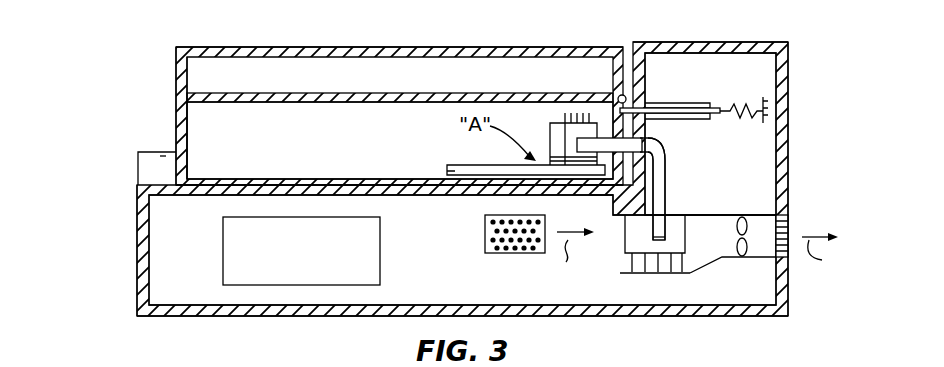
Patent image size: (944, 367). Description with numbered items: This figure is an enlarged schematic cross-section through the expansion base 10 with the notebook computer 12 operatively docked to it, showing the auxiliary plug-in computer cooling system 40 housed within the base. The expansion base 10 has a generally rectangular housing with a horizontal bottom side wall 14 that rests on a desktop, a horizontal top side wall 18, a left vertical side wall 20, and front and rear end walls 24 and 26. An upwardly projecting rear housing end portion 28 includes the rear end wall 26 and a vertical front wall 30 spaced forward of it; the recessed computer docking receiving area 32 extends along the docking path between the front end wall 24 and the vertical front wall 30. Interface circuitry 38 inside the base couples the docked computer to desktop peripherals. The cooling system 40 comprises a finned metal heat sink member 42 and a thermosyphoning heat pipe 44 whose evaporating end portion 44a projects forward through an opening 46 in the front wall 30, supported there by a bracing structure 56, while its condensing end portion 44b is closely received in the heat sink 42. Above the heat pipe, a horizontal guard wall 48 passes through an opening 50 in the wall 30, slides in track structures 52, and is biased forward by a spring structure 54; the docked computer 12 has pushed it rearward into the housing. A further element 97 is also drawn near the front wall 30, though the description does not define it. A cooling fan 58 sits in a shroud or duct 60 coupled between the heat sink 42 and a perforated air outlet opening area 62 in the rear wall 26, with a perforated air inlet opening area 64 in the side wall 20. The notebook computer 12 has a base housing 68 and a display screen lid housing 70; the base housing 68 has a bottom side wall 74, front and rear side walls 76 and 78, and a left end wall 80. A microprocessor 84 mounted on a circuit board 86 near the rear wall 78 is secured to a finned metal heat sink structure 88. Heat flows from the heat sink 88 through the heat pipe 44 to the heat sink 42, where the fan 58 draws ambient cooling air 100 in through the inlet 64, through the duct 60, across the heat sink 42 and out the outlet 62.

The expansion base 10 is at (715, 28).
The notebook computer 12 is at (412, 40).
The bottom side wall 14 is at (705, 317).
The top side wall 18 is at (148, 184).
The left vertical side wall 20 is at (444, 258).
The front end wall 24 is at (136, 276).
The rear end wall 26 is at (789, 128).
The rear housing end portion 28 is at (796, 51).
The vertical front wall 30 is at (648, 42).
The computer docking receiving area 32 is at (163, 158).
The interface circuitry 38 is at (222, 238).
The plug-in computer cooling system 40 is at (748, 175).
The finned metal heat sink member 42 is at (623, 238).
The thermosyphoning heat pipe 44 is at (682, 153).
The evaporating end portion 44a is at (608, 136).
The condensing end portion 44b is at (666, 233).
The opening 46 is at (640, 142).
The guard wall 48 is at (668, 103).
The opening 50 is at (653, 100).
The track structures 52 is at (714, 104).
The spring structure 54 is at (770, 100).
The bracing structure 56 is at (666, 172).
The cooling fan 58 is at (778, 258).
The shroud or duct 60 is at (701, 270).
The perforated air outlet opening area 62 is at (790, 224).
The perforated air inlet opening area 64 is at (497, 254).
The base housing 68 is at (167, 107).
The display screen lid housing 70 is at (168, 60).
The bottom side wall 74 is at (311, 180).
The front side wall 76 is at (190, 142).
The rear side wall 78 is at (608, 197).
The left end wall 80 is at (372, 140).
The microprocessor 84 is at (560, 158).
The circuit board 86 is at (456, 164).
The finned metal heat sink structure 88 is at (590, 116).
The seal 97 is at (621, 94).
The ambient cooling air 100 is at (697, 257).